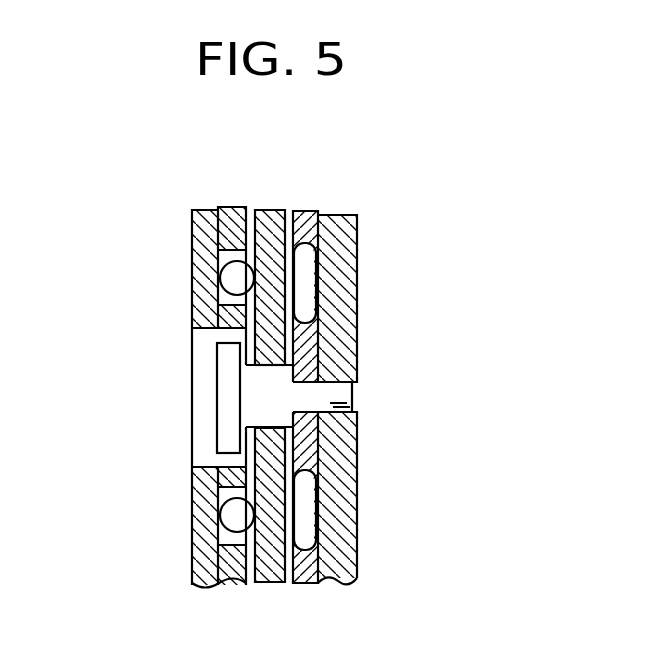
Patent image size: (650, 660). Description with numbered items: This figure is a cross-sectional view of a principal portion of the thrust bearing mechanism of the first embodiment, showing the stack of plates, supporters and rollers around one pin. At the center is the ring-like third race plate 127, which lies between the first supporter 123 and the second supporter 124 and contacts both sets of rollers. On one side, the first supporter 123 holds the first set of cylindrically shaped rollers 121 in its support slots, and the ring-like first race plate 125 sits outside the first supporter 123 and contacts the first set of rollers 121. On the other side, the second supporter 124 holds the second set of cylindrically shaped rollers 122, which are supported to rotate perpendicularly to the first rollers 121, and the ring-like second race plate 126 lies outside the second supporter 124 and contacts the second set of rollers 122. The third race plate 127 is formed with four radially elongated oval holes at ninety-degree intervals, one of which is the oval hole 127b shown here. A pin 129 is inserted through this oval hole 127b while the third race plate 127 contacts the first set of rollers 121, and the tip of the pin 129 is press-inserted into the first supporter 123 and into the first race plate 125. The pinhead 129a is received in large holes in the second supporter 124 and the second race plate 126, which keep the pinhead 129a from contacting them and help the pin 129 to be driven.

The first set of cylindrically shaped rollers 121 is at (313, 493).
The second set of cylindrically shaped rollers 122 is at (232, 280).
The first supporter 123 is at (310, 213).
The second supporter 124 is at (230, 212).
The first race plate 125 is at (348, 238).
The second race plate 126 is at (207, 215).
The third race plate 127 is at (268, 215).
The oval hole 127b is at (268, 355).
The pin 129 is at (213, 367).
The pinhead 129a is at (228, 396).